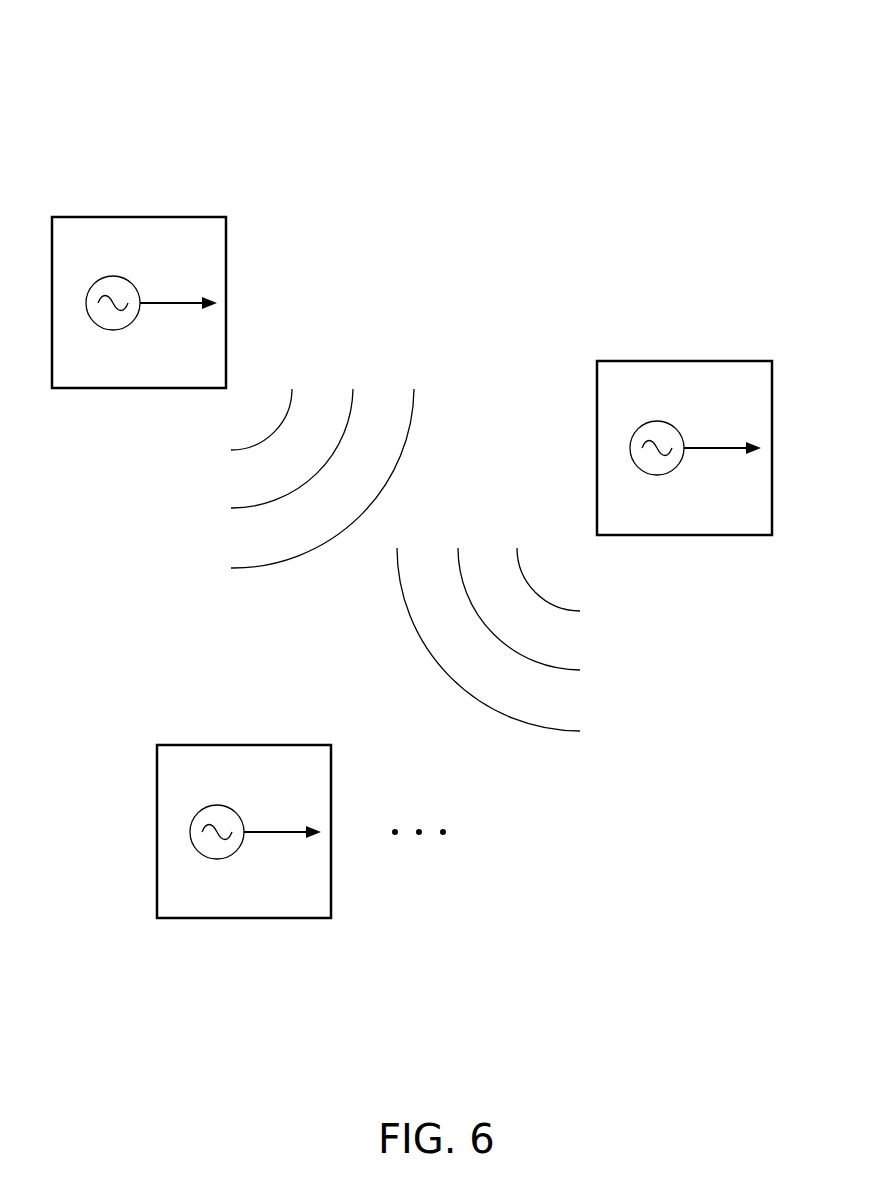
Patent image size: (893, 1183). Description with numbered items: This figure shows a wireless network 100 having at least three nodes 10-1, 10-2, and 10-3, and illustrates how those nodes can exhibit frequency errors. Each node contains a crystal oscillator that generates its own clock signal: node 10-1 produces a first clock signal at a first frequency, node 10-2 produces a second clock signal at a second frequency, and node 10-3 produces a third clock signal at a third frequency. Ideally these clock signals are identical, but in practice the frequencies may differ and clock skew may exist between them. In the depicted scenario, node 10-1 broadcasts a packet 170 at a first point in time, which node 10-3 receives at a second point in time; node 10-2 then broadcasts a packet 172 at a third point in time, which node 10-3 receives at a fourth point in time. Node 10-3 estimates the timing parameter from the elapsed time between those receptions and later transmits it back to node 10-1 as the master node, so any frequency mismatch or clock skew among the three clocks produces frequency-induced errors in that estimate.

The network 100 is at (682, 50).
The node 10-1 is at (140, 270).
The node 10-2 is at (684, 416).
The node 10-3 is at (245, 798).
The packet 170 is at (433, 358).
The packet 172 is at (609, 588).